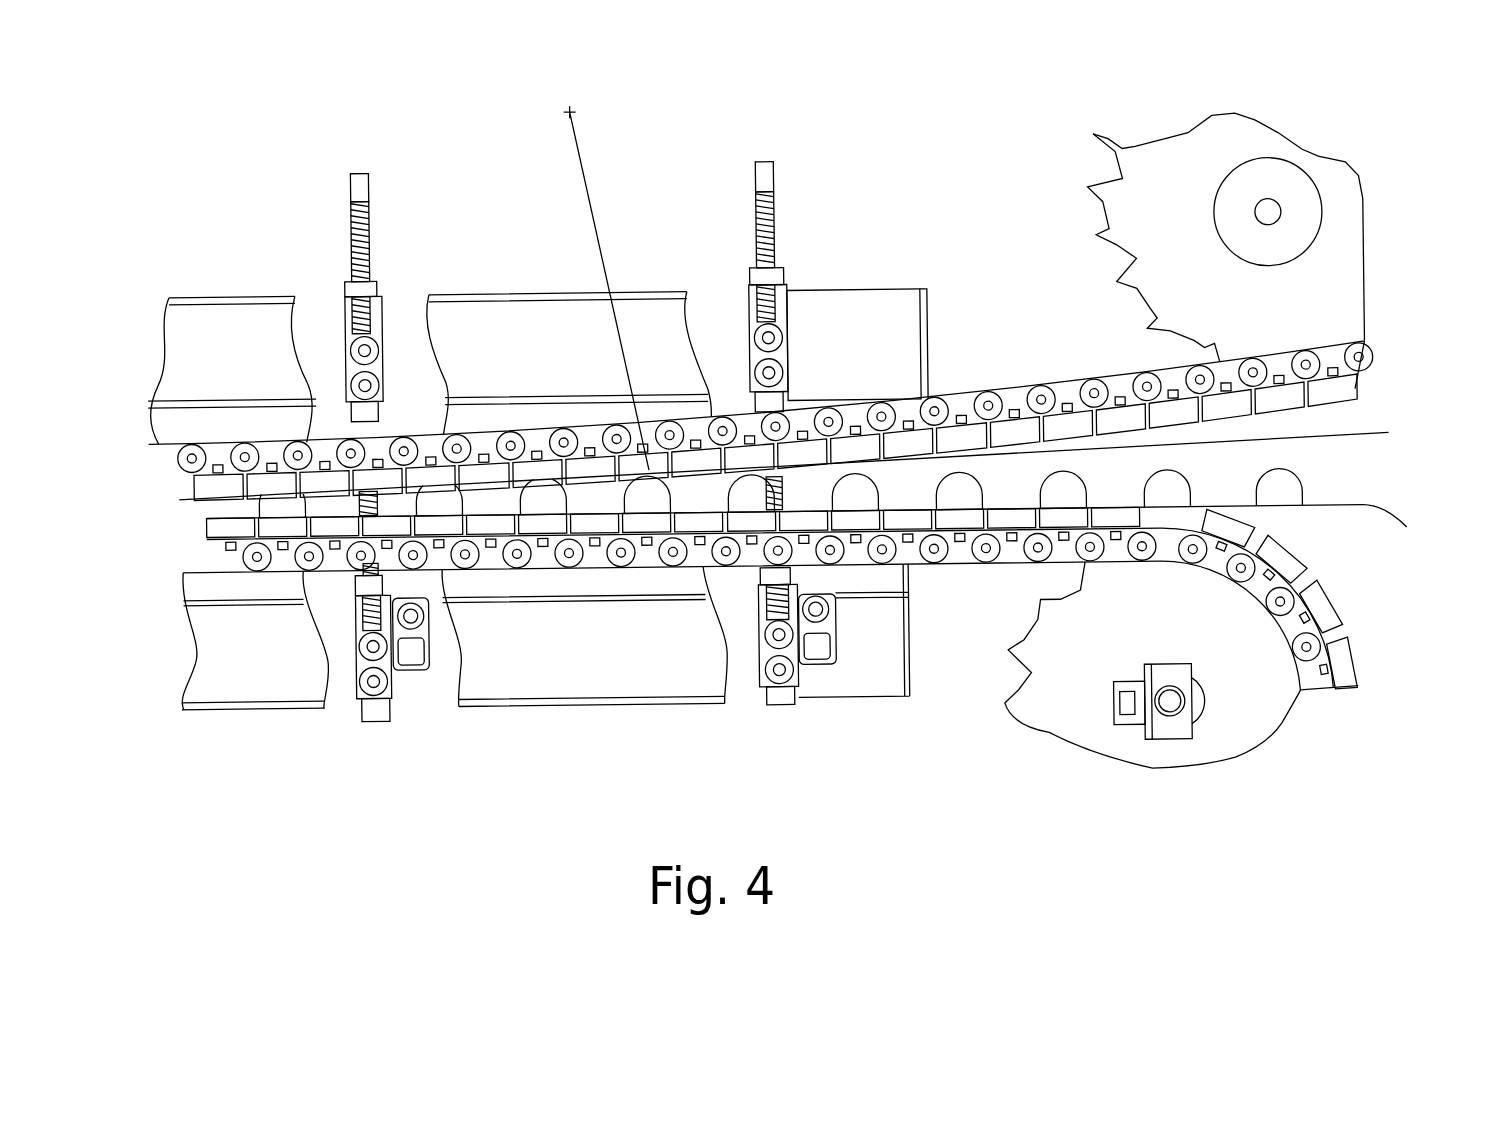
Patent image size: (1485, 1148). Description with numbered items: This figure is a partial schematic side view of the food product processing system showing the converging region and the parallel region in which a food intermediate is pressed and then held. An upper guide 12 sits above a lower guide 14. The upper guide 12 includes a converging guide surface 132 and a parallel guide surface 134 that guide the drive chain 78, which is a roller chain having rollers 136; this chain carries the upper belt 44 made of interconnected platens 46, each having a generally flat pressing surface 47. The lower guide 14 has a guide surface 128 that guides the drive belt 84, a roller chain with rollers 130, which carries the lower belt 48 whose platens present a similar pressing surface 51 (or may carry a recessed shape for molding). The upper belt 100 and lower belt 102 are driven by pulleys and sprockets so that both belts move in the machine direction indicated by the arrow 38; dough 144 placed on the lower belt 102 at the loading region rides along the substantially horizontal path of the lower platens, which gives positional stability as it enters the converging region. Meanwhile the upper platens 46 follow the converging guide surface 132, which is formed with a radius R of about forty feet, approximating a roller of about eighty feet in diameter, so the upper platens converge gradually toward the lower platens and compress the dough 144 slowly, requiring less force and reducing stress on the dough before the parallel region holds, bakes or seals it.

The upper guide 12 is at (587, 326).
The lower guide 14 is at (872, 690).
The conveying direction 38 is at (1062, 377).
The upper belt 44 is at (1377, 395).
The platens 46 is at (1290, 419).
The pressing surface 47 is at (1290, 422).
The lower belt 48 is at (1371, 701).
The pressing surface 51 is at (1280, 566).
The drive chain 78 is at (962, 386).
The drive belt 84 is at (925, 594).
The upper belt 100 is at (1347, 447).
The lower belt 102 is at (832, 542).
The guide surface 128 is at (212, 574).
The rollers 130 is at (568, 560).
The converging guide surface 132 is at (857, 407).
The parallel guide surface 134 is at (232, 455).
The rollers 136 is at (1148, 397).
The dough 144 is at (1067, 505).
The radius R is at (606, 288).